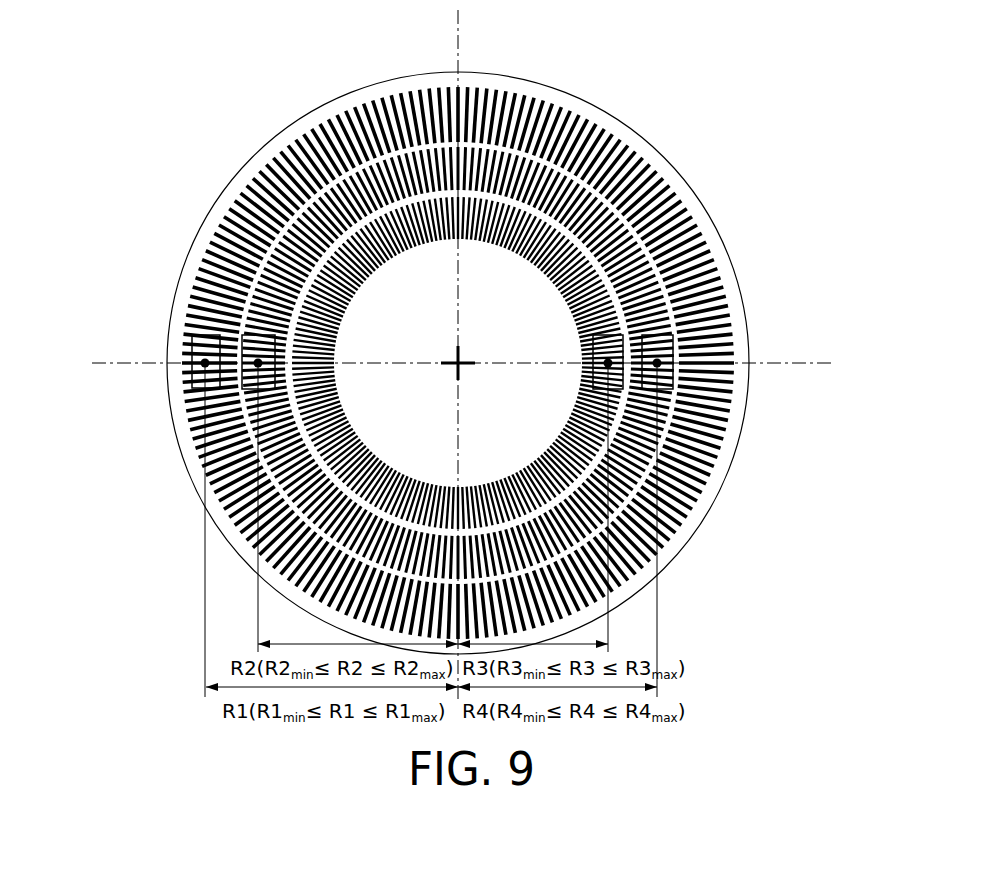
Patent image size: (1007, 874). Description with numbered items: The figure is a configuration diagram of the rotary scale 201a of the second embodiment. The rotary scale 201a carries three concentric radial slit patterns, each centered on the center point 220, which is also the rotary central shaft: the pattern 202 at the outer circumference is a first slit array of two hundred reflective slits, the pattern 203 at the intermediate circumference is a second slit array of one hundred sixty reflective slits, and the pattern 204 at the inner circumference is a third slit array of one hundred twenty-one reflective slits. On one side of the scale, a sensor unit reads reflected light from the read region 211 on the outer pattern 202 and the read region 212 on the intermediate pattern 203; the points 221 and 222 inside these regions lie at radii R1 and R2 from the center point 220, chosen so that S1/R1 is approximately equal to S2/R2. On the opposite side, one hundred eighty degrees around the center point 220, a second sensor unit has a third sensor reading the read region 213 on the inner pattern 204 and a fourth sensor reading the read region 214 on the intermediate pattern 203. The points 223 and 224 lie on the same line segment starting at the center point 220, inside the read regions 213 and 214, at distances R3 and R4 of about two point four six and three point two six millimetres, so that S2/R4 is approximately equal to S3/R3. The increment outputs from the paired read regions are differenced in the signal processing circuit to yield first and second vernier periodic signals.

The rotary scale 201a is at (603, 108).
The pattern 202 is at (705, 252).
The pattern 203 is at (650, 225).
The pattern 204 is at (548, 272).
The center point 220 is at (458, 350).
The read region 211 is at (190, 375).
The read region 212 is at (245, 388).
The read region 213 is at (625, 390).
The read region 214 is at (677, 385).
The point 221 is at (195, 340).
The point 222 is at (242, 335).
The point 223 is at (618, 345).
The point 224 is at (660, 340).